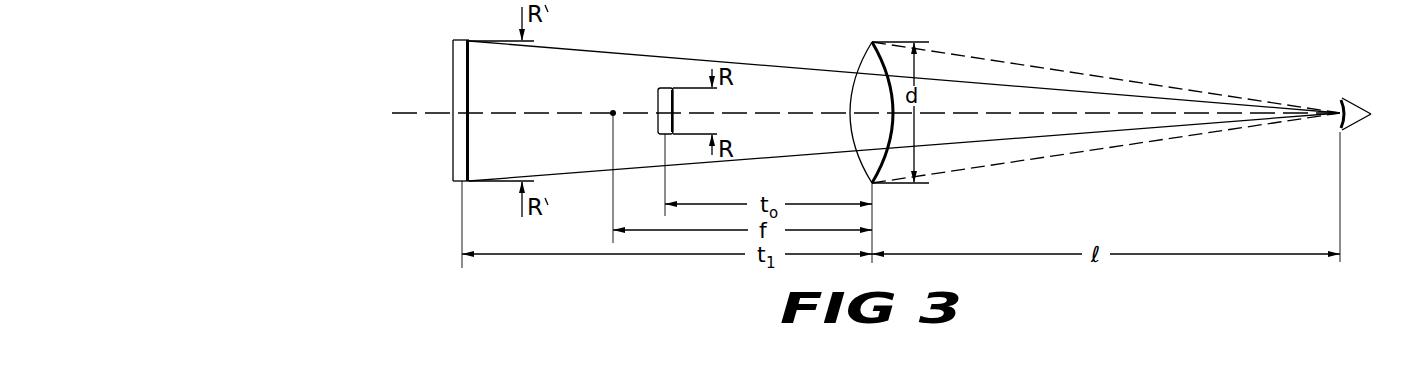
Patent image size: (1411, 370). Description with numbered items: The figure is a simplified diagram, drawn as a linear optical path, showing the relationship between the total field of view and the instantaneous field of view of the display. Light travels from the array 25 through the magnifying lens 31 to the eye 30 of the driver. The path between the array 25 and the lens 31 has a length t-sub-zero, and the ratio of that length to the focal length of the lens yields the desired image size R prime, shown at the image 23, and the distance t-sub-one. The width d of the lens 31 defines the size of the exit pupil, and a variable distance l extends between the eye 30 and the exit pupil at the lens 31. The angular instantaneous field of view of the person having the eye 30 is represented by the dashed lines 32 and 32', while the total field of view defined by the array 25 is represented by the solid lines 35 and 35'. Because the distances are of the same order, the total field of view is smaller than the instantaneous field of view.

The image 23 is at (453, 55).
The array 25 is at (659, 89).
The eye 30 is at (1357, 108).
The magnifying lens 31 is at (858, 159).
The dashed line 32 is at (1106, 74).
The dashed line 32' is at (1106, 156).
The solid line 35 is at (904, 68).
The solid line 35' is at (904, 156).